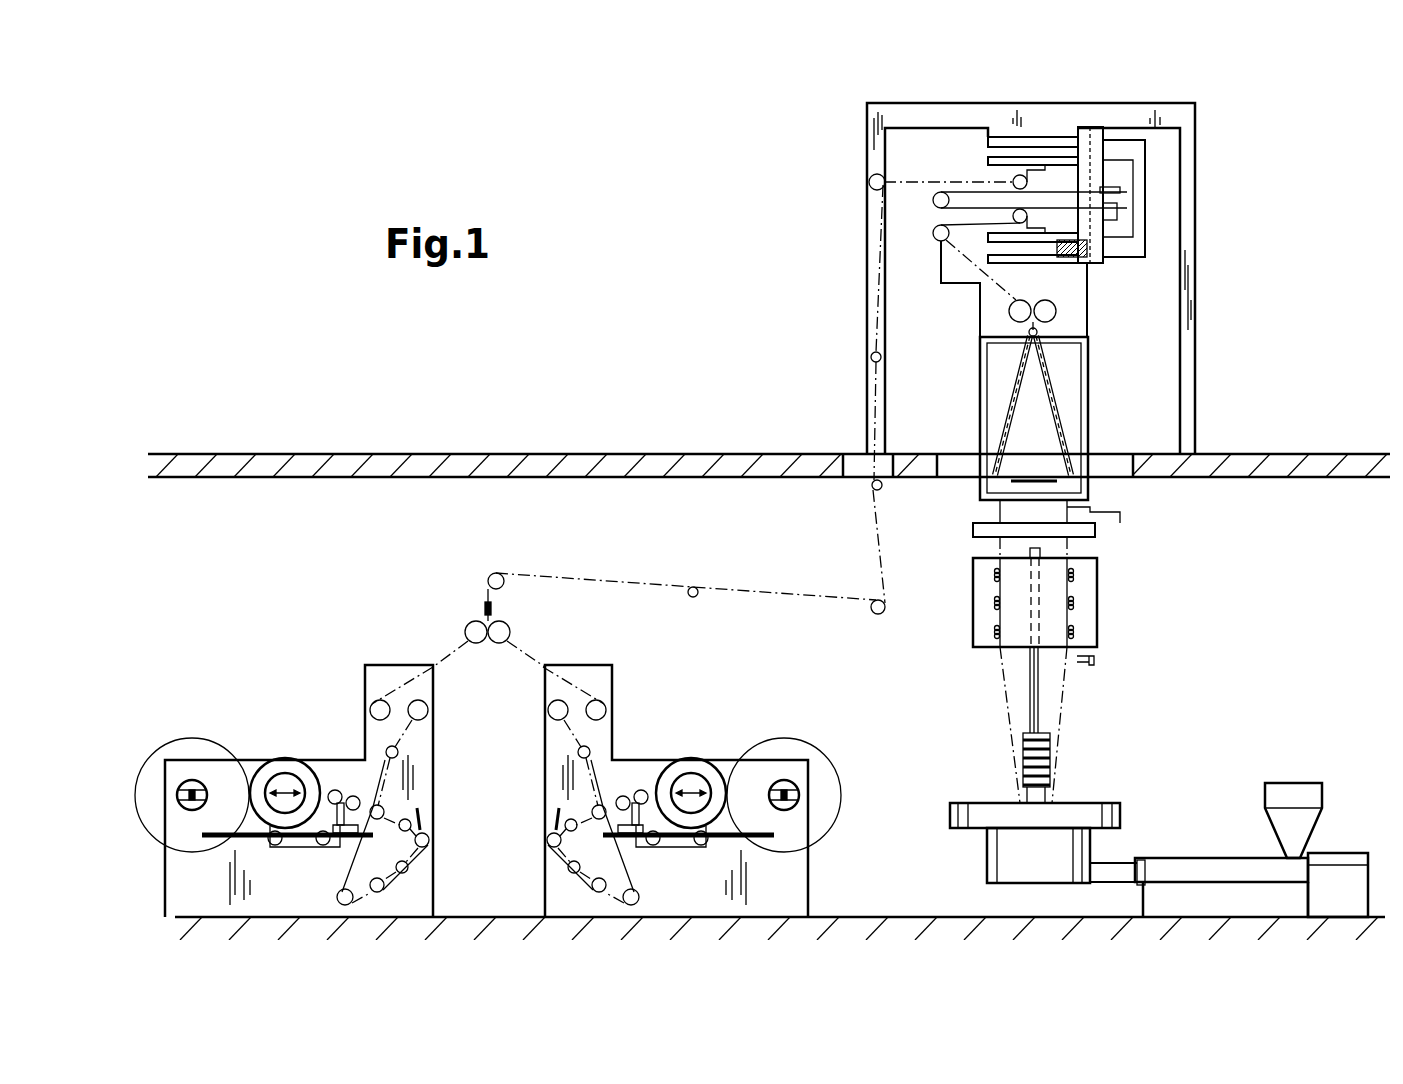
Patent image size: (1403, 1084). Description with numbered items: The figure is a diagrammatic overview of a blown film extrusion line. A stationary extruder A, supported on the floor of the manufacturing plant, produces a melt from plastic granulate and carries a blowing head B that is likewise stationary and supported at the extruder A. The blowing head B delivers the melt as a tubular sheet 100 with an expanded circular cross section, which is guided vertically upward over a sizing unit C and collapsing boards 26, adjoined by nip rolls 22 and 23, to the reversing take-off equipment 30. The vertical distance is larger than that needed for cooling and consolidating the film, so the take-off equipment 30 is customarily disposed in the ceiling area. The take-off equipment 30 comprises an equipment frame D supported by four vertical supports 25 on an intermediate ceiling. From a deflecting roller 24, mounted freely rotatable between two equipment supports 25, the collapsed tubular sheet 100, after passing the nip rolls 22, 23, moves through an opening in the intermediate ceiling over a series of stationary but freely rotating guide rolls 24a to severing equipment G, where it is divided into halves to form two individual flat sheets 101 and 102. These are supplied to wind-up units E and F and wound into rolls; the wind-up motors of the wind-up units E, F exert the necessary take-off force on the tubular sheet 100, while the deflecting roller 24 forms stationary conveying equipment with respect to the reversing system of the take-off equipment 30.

The extruder A is at (1180, 862).
The blowing head B is at (1080, 808).
The sizing unit C is at (1088, 605).
The equipment frame D is at (1195, 312).
The windup unit E is at (423, 782).
The windup unit F is at (563, 793).
The severing equipment G is at (485, 606).
The nip roll 22 is at (1057, 311).
The nip roll 23 is at (1010, 320).
The deflecting roller 24 is at (868, 182).
The guide rolls 24a is at (873, 486).
The vertical support 25 is at (878, 330).
The collapsing boards 26 is at (1060, 400).
The take-off equipment 30 is at (1157, 197).
The tubular sheet 100 is at (593, 575).
The flat sheet 101 is at (447, 660).
The flat sheet 102 is at (520, 660).